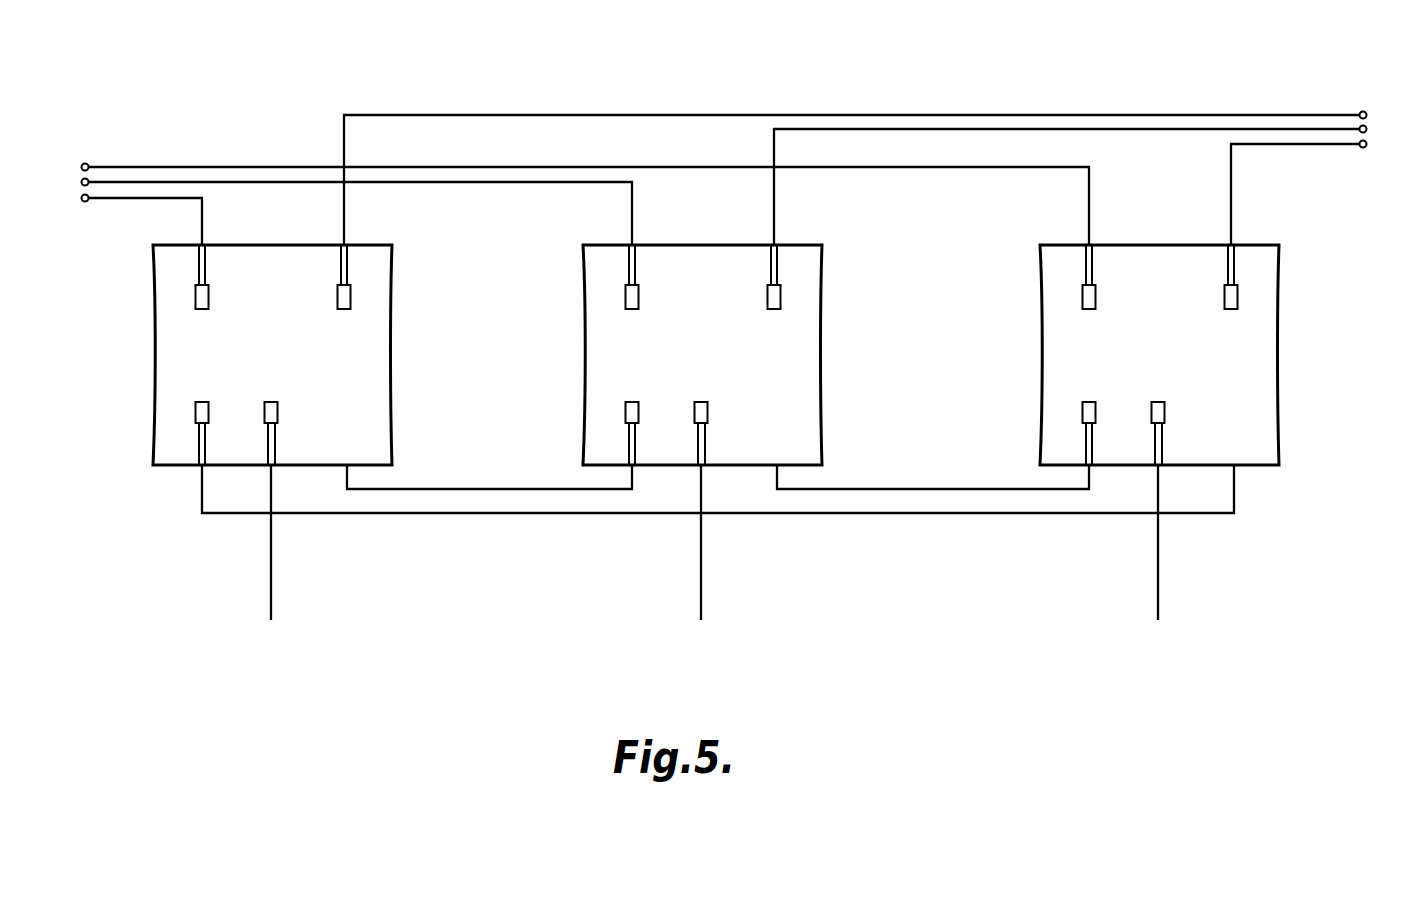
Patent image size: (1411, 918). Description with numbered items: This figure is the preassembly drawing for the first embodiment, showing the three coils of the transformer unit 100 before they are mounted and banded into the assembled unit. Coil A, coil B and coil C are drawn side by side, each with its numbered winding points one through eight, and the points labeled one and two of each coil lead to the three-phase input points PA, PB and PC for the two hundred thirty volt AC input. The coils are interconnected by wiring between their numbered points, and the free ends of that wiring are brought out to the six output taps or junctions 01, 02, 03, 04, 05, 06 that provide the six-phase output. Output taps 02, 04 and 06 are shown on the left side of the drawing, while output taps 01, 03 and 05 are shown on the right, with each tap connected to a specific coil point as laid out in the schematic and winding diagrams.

The three-phase coil circuit 100 is at (725, 336).
The output tap 01 is at (1312, 192).
The output tap 02 is at (573, 197).
The output tap 03 is at (868, 171).
The output tap 04 is at (344, 207).
The output tap 05 is at (1083, 182).
The output tap 06 is at (129, 216).